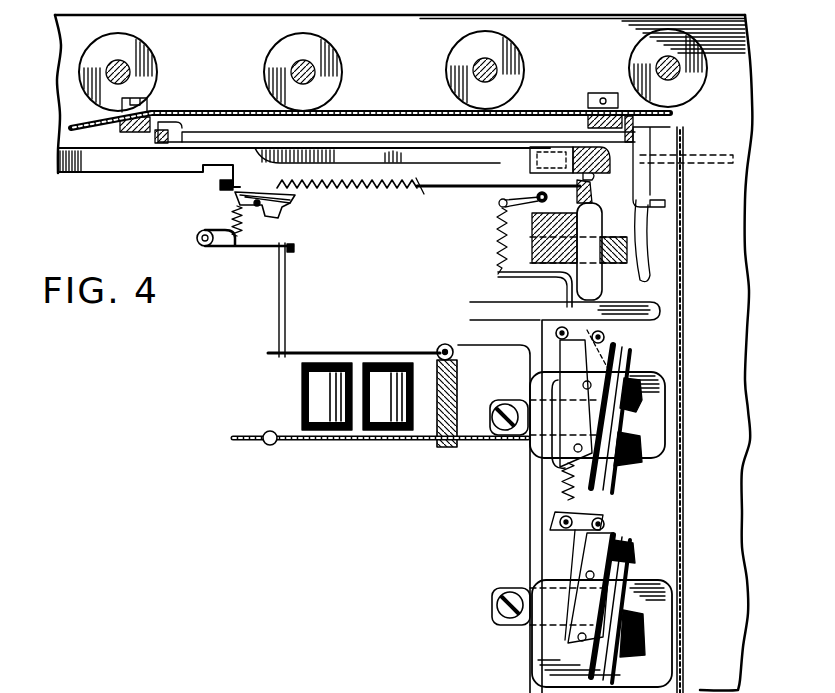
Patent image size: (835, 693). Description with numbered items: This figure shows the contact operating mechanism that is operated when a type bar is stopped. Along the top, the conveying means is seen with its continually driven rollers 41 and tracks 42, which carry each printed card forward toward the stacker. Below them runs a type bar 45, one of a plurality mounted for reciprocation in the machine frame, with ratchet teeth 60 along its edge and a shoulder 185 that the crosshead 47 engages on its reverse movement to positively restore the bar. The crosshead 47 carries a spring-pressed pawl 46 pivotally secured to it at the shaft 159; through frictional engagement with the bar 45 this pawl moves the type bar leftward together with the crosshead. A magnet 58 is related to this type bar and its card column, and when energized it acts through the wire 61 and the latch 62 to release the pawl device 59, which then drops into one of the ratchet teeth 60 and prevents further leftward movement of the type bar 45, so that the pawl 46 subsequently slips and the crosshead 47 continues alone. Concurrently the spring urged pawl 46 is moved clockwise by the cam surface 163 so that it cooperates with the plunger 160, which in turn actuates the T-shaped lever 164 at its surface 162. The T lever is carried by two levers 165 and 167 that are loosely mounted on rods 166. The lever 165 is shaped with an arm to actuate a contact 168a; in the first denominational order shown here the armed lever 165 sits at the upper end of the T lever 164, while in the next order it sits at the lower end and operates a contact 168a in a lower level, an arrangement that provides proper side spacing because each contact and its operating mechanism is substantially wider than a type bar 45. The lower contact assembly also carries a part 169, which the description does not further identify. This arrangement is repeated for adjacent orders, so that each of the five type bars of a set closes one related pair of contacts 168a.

The rollers 41 is at (270, 56).
The tracks 42 is at (372, 110).
The type bar 45 is at (416, 190).
The spring-pressed pawl 46 is at (590, 201).
The crosshead 47 is at (497, 222).
The magnet 58 is at (303, 404).
The pawl device 59 is at (282, 210).
The ratchet teeth 60 is at (352, 190).
The wire 61 is at (278, 298).
The latch 62 is at (231, 249).
The shaft 159 is at (503, 199).
The plunger 160 is at (590, 232).
The surface 162 is at (657, 303).
The cam surface 163 is at (580, 180).
The T-shaped lever 164 is at (526, 312).
The armed lever 165 is at (555, 345).
The rods 166 is at (605, 341).
The lever 167 is at (630, 365).
The contact 168a is at (632, 349).
The switch plate 169 is at (603, 557).
The shoulders 185 is at (585, 124).